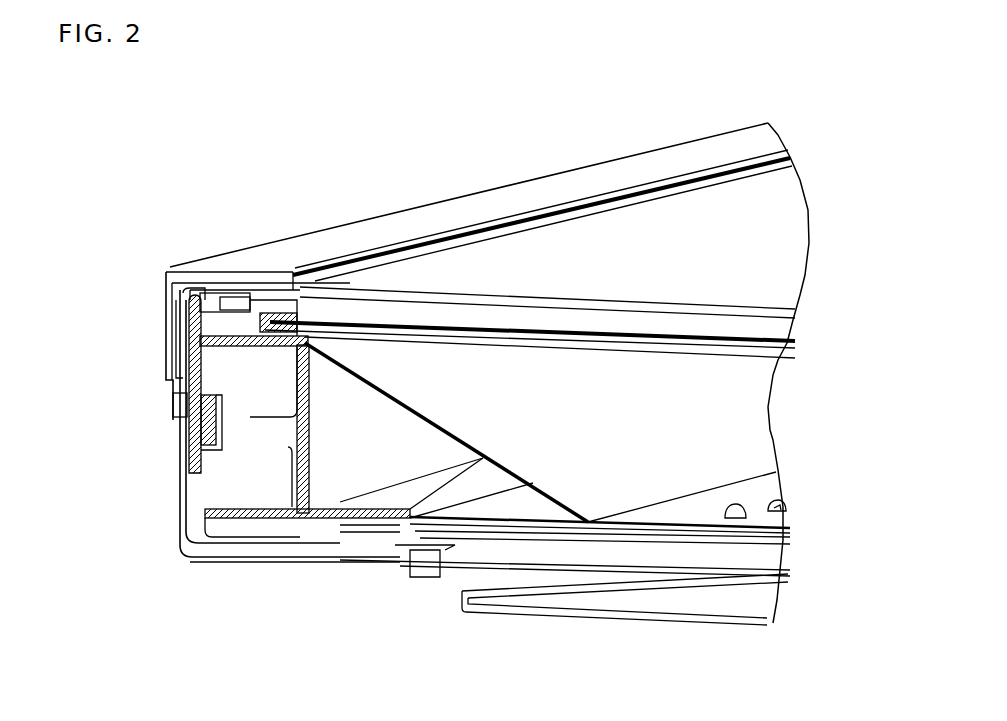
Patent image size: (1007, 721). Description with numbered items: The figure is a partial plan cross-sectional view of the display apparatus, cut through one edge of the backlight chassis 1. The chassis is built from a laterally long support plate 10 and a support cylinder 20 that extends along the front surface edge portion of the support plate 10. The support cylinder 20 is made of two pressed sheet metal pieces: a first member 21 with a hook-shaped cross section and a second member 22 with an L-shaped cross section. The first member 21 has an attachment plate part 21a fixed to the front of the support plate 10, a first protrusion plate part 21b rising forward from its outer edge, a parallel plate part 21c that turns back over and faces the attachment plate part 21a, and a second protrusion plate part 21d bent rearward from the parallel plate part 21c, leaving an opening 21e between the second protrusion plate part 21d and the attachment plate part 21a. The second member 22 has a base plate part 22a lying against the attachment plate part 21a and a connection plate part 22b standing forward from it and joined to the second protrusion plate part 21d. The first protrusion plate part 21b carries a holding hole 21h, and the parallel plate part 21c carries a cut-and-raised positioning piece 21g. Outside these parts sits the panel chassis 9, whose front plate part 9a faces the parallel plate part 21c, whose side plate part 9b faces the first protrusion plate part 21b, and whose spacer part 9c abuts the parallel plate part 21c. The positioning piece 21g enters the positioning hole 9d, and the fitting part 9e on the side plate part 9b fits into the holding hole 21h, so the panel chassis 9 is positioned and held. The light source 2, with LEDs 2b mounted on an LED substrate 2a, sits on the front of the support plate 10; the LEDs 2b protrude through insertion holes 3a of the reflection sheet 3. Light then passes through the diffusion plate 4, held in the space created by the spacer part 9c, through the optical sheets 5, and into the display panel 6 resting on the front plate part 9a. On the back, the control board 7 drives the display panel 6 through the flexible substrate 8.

The backlight chassis 1 is at (415, 533).
The light source 2 is at (728, 500).
The LED substrate 2a is at (747, 535).
The light emitting diodes (LEDs) 2b is at (768, 511).
The reflection sheet 3 is at (753, 423).
The insertion holes 3a is at (786, 511).
The diffusion plate 4 is at (767, 348).
The optical sheets 5 is at (777, 333).
The display panel 6 is at (675, 215).
The control board 7 is at (773, 575).
The flexible substrate 8 is at (220, 552).
The panel chassis 9 is at (187, 367).
The front plate part 9a is at (247, 310).
The side plate part 9b is at (190, 320).
The spacer part 9c is at (257, 310).
The positioning hole 9d is at (217, 310).
The fitting part 9e is at (197, 427).
The support plate 10 is at (707, 540).
The support cylinder 20 is at (390, 380).
The first member 21 is at (197, 502).
The attachment plate part 21a is at (335, 520).
The first protrusion plate part 21b is at (173, 480).
The parallel plate part 21c is at (183, 343).
The second protrusion plate part 21d is at (325, 330).
The opening 21e is at (187, 397).
The positioning piece 21g is at (240, 290).
The holding hole 21h is at (228, 545).
The second member 22 is at (392, 523).
The base plate part 22a is at (400, 520).
The connection plate part 22b is at (292, 520).